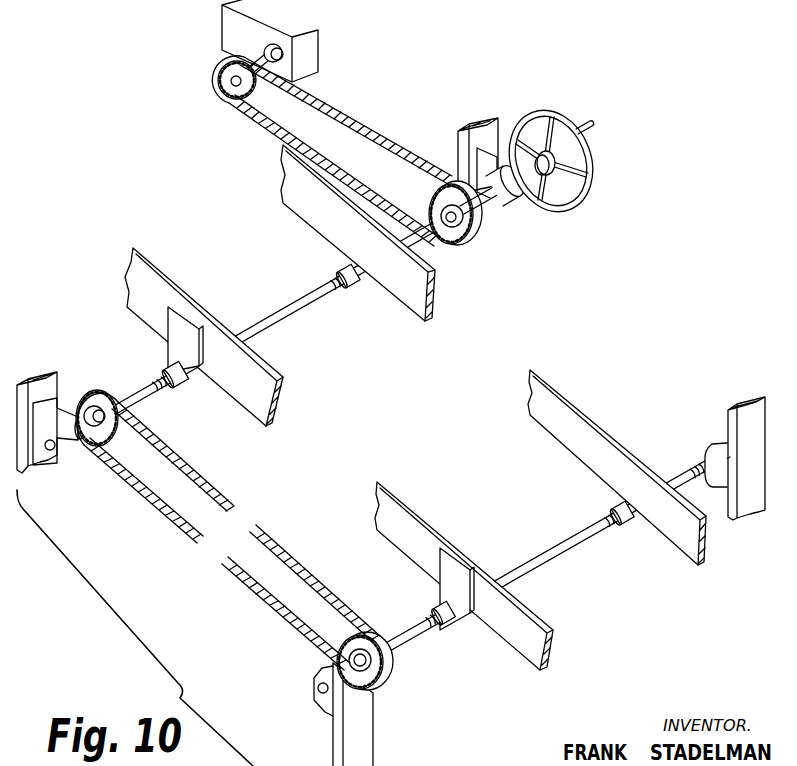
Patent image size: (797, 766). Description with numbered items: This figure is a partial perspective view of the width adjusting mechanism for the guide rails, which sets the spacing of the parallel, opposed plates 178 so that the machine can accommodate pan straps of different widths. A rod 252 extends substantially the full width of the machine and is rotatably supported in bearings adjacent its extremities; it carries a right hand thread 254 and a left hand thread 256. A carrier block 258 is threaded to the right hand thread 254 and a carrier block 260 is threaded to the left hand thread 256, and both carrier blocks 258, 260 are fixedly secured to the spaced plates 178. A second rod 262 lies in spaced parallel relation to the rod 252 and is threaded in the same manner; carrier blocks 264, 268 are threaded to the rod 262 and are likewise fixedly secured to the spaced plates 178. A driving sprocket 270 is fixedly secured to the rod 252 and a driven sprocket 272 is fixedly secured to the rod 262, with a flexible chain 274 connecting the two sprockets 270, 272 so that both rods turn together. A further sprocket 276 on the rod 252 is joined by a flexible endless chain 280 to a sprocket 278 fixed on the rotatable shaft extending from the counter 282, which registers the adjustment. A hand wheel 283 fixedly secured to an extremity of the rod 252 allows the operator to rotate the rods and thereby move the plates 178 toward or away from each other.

The plates 178 is at (422, 308).
The rod 252 is at (263, 323).
The right hand thread 254 is at (165, 387).
The left hand thread 256 is at (343, 290).
The carrier block 258 is at (178, 355).
The carrier block 260 is at (350, 262).
The rod 262 is at (555, 555).
The carrier block 264 is at (452, 588).
The carrier block 268 is at (633, 517).
The driving sprocket 270 is at (88, 402).
The driven sprocket 272 is at (380, 673).
The flexible chain 274 is at (160, 497).
The sprocket 276 is at (468, 225).
The sprocket 278 is at (220, 80).
The flexible endless chain 280 is at (343, 110).
The counter 282 is at (297, 22).
The hand wheel 283 is at (593, 153).